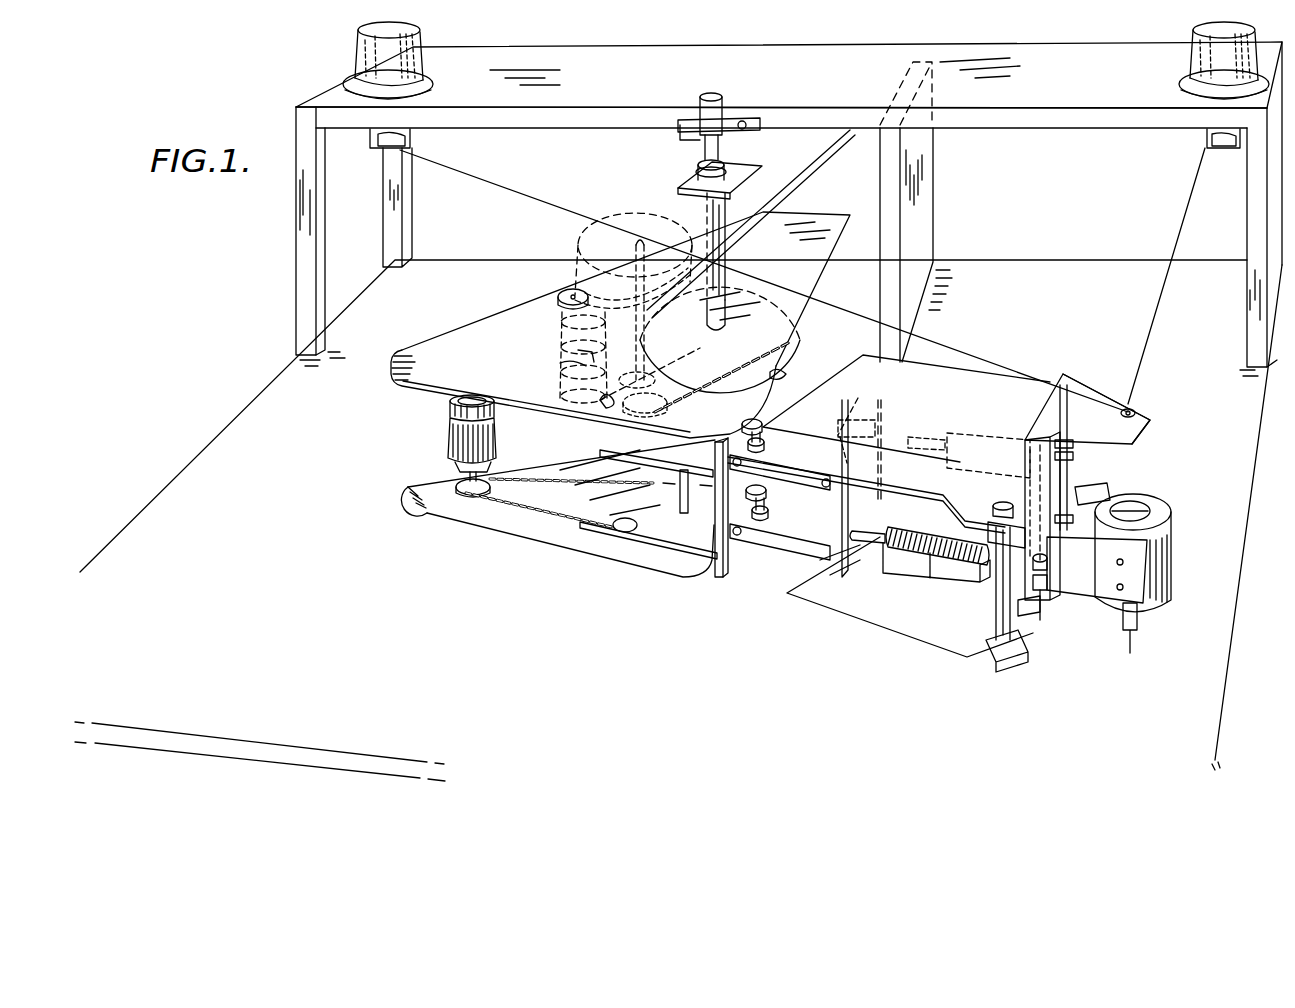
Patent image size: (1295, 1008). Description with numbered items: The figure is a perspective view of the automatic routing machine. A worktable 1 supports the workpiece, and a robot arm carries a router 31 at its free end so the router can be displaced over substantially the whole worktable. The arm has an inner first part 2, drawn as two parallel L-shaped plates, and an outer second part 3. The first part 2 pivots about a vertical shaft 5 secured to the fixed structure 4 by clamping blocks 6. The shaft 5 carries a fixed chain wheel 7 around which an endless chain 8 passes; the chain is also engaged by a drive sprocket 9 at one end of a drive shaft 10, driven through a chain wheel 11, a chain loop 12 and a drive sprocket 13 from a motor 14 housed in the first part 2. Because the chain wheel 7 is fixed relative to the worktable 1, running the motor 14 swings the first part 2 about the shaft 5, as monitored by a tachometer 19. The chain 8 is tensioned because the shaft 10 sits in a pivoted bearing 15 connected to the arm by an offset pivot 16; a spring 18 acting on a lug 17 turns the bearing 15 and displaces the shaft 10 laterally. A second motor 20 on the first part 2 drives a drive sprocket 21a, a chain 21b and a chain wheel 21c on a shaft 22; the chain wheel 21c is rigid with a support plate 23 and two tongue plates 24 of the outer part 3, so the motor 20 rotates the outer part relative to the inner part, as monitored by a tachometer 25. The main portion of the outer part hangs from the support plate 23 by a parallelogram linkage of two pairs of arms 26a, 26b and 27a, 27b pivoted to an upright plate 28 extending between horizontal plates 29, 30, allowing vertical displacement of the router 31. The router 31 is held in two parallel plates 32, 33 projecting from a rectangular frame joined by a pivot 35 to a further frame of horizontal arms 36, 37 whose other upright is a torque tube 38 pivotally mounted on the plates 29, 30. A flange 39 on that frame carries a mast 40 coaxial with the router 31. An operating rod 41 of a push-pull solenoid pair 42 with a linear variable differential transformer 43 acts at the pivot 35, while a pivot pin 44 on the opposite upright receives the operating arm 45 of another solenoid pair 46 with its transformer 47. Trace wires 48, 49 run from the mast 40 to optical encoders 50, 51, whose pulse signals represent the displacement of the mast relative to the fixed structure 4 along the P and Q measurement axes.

The worktable 1 is at (178, 478).
The inner first part of robot arm 2 is at (452, 296).
The outer second part of robot arm 3 is at (985, 377).
The fixed structure 4 is at (678, 72).
The shaft 5 is at (700, 152).
The clamping blocks 6 is at (743, 118).
The chain wheel 7 is at (762, 303).
The chain 8 is at (773, 377).
The drive sprocket 9 is at (657, 403).
The drive shaft 10 is at (620, 322).
The chain wheel 11 is at (625, 212).
The chain loop 12 is at (580, 257).
The drive sprocket 13 is at (566, 291).
The motor 14 is at (566, 362).
The pivoted bearing 15 is at (770, 348).
The pivot 16 is at (767, 324).
The lug 17 is at (583, 350).
The spring 18 is at (600, 402).
The tachometer 19 is at (580, 394).
The second motor 20 is at (450, 447).
The drive sprocket 21a is at (455, 487).
The chain 21b is at (474, 513).
The chain wheel 21c is at (680, 532).
The shaft 22 is at (619, 553).
The support plate 23 is at (740, 570).
The tongue plates 24 is at (573, 524).
The tachometer 25 is at (447, 413).
The arm of parallelogram linkage 26a is at (772, 522).
The arm of parallelogram linkage 26b is at (808, 505).
The arm of parallelogram linkage 27a is at (700, 525).
The arm of parallelogram linkage 27b is at (823, 406).
The upright plate 28 is at (882, 420).
The horizontal plate 29 is at (850, 600).
The horizontal plate 30 is at (910, 362).
The router 31 is at (1158, 540).
The plate (bracket) 32 is at (1133, 575).
The plate (bracket) 33 is at (1107, 492).
The pivot 35 is at (1087, 455).
The horizontal arm 36 is at (996, 527).
The horizontal arm 37 is at (1005, 637).
The torque tube and pivot pin 38 is at (1030, 647).
The flange 39 is at (1140, 425).
The mast 40 is at (1135, 414).
The operating rod (plunger) 41 is at (1050, 440).
The push-pull solenoid pair 42 is at (980, 437).
The linear variable differential transformer 43 is at (932, 445).
The pivot pin 44 is at (1035, 558).
The operating arm 45 is at (963, 620).
The push-pull solenoid pair 46 is at (890, 558).
The linear variable differential transformer 47 is at (858, 524).
The trace wire 48 is at (457, 170).
The trace wire 49 is at (1200, 166).
The optical encoder 50 is at (402, 48).
The optical encoder 51 is at (1215, 45).